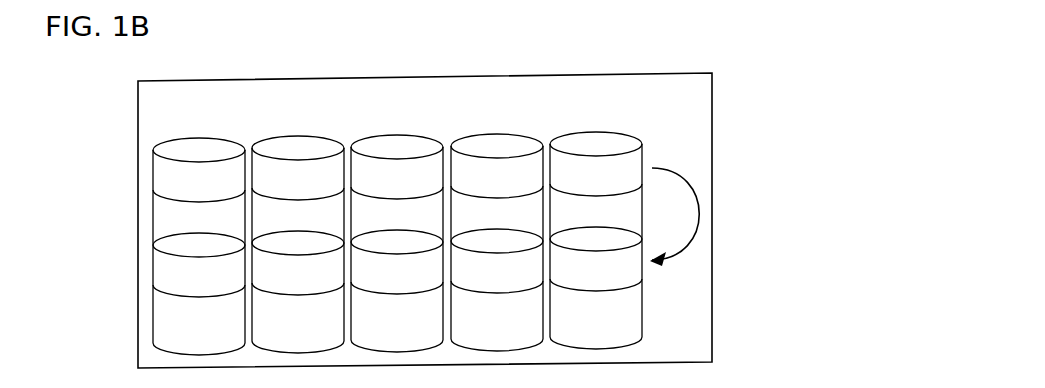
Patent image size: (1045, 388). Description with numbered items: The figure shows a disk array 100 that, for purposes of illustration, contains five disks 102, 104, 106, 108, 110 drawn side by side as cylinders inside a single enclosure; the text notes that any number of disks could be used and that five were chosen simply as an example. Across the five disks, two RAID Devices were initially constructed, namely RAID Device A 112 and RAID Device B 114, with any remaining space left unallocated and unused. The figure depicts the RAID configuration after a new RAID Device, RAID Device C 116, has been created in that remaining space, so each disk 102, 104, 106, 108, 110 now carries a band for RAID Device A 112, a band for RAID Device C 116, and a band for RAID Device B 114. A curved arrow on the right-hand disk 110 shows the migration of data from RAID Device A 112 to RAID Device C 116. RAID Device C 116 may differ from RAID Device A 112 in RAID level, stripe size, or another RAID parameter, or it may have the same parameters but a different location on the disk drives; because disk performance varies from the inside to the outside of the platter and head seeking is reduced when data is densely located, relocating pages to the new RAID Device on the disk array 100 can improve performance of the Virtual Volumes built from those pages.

The disk array 100 is at (780, 120).
The disk 102 is at (235, 138).
The disk 104 is at (334, 136).
The disk 106 is at (433, 135).
The disk 108 is at (533, 134).
The disk 110 is at (631, 131).
The RAID Device A 112 is at (152, 175).
The RAID Device B 114 is at (152, 318).
The RAID Device C 116 is at (152, 268).